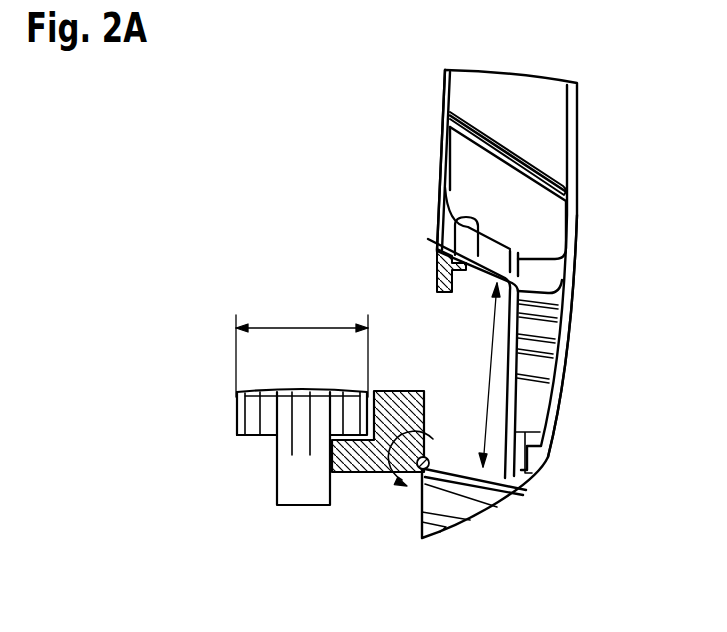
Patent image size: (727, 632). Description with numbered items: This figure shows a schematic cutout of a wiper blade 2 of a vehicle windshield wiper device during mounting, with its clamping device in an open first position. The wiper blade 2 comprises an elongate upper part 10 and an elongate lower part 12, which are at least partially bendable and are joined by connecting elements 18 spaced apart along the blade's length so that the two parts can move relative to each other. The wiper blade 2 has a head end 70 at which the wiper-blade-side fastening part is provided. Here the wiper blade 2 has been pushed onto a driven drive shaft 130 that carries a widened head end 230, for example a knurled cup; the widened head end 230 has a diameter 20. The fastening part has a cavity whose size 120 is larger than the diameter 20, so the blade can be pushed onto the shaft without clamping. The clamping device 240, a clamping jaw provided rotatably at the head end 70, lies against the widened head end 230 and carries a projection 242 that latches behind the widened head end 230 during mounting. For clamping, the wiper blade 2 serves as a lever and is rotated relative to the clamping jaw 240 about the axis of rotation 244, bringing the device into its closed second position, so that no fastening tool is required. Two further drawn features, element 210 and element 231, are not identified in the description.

The wiper blade 2 is at (606, 86).
The upper part 10 is at (568, 150).
The lower part 12 is at (445, 80).
The connecting elements 18 is at (510, 150).
The diameter 20 is at (300, 325).
The head end 70 is at (589, 370).
The size 120 is at (492, 357).
The drive shaft 130 is at (298, 493).
The hook element 210 is at (477, 248).
The widened head end 230 is at (243, 415).
The underside of knob head 231 is at (250, 438).
The clamping device 240 is at (353, 460).
The projection 242 is at (437, 270).
The axis of rotation 244 is at (430, 458).